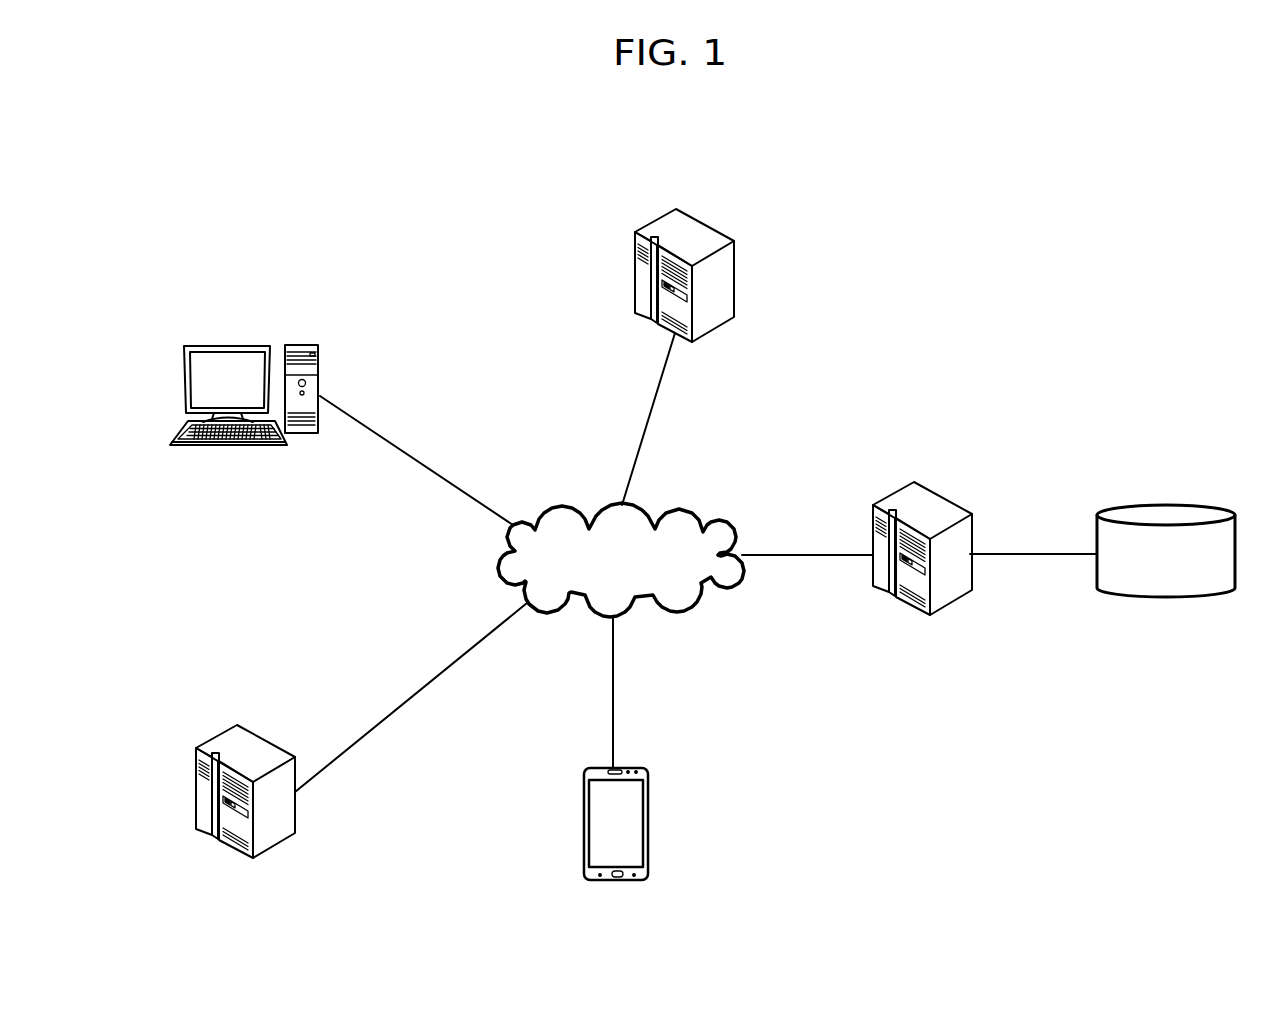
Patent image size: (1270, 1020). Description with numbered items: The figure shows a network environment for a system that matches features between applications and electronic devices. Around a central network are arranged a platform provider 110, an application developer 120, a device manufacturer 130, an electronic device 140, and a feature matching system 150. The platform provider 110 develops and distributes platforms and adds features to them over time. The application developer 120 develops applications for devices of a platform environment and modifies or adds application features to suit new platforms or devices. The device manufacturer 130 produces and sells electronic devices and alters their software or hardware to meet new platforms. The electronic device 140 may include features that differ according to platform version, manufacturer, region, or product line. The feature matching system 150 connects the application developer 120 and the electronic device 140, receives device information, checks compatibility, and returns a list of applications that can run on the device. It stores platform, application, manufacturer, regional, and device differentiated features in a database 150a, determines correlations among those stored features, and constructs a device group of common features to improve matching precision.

The platform provider 110 is at (703, 226).
The application developer 120 is at (228, 346).
The device manufacturer 130 is at (265, 741).
The electronic device 140 is at (647, 769).
The feature matching system 150 is at (942, 494).
The database 150a is at (1168, 504).